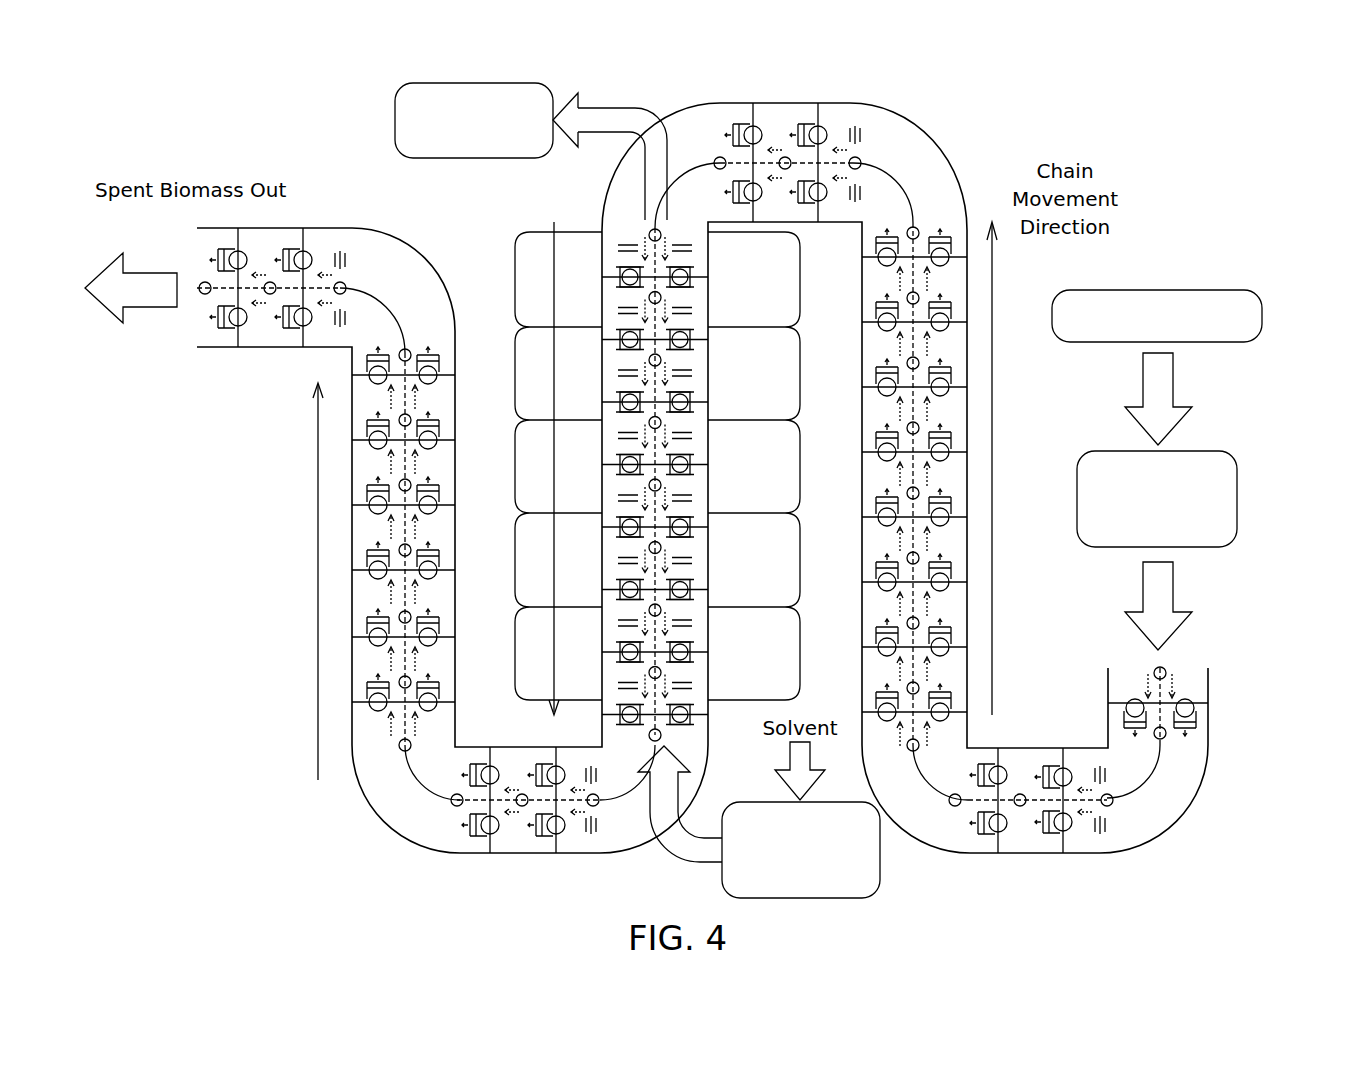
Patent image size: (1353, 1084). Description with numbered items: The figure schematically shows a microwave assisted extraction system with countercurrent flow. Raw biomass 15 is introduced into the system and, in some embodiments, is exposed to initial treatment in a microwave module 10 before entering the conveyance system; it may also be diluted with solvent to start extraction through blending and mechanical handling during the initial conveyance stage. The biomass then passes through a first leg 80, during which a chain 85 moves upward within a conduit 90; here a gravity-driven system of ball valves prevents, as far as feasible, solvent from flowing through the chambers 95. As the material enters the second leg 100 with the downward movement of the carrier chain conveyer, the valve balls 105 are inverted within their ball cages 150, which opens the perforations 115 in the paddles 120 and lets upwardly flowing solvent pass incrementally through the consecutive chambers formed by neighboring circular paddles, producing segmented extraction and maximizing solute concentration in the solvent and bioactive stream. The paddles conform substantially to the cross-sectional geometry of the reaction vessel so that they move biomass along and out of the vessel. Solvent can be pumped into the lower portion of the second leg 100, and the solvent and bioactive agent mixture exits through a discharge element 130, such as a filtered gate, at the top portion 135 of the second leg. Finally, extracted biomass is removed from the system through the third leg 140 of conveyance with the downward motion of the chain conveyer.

The microwave module 10 is at (515, 283).
The raw biomass 15 is at (1264, 320).
The first leg 80 is at (1000, 247).
The chain 85 is at (940, 778).
The conduit 90 is at (1168, 800).
The chambers 95 is at (1063, 868).
The second leg 100 is at (521, 199).
The valve balls 105 is at (1070, 828).
The perforations 115 is at (600, 697).
The paddles 120 is at (925, 516).
The discharge element 130 is at (395, 122).
The top portion 135 is at (660, 100).
The third leg 140 is at (305, 535).
The ball cages 150 is at (1046, 766).